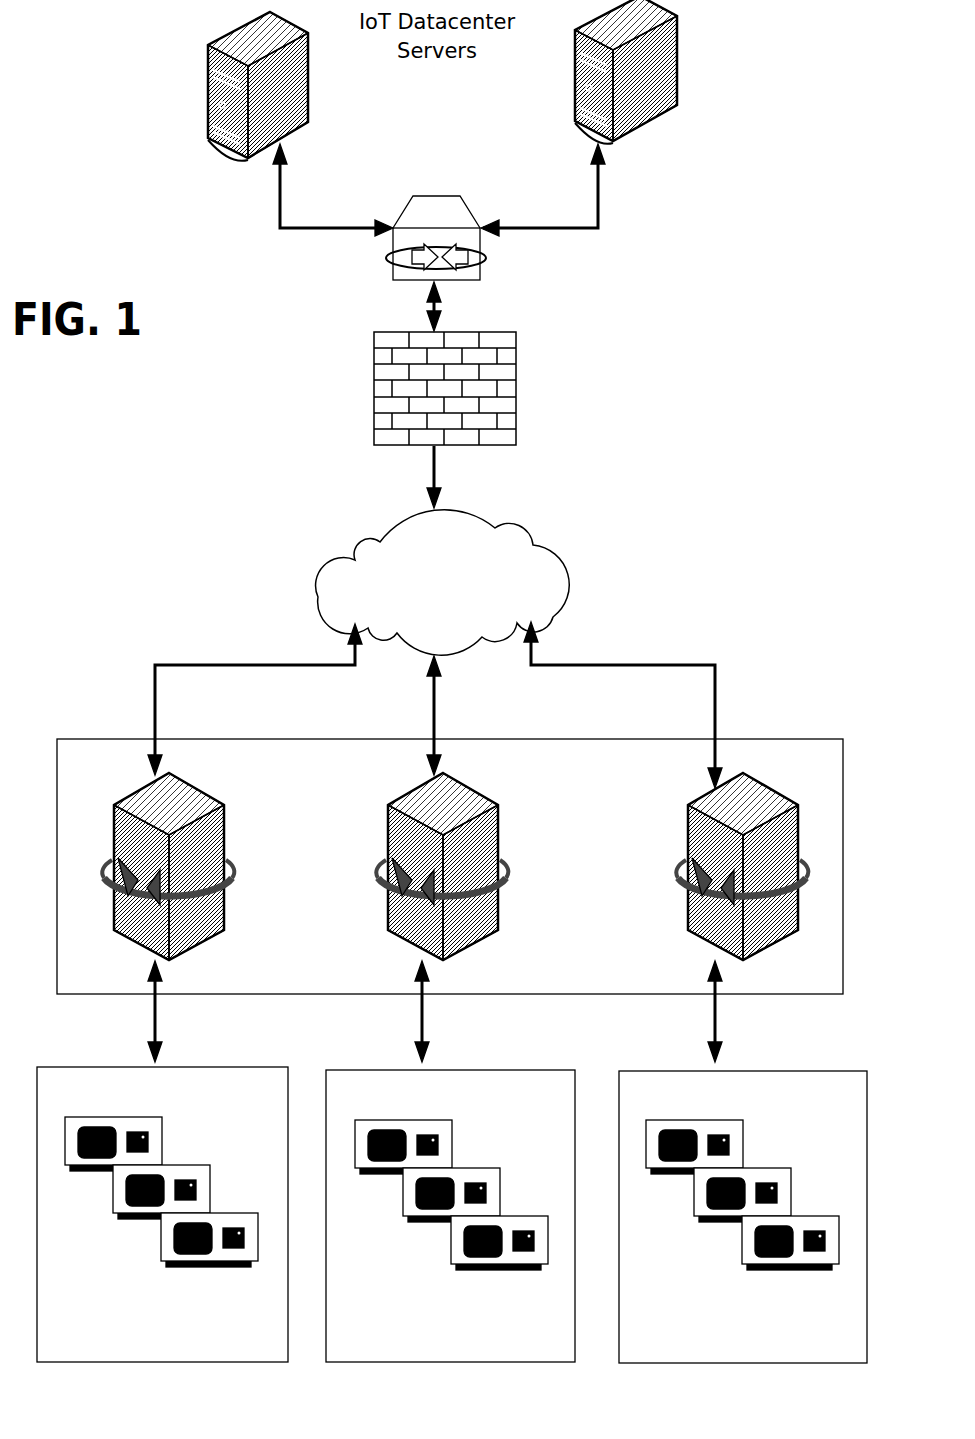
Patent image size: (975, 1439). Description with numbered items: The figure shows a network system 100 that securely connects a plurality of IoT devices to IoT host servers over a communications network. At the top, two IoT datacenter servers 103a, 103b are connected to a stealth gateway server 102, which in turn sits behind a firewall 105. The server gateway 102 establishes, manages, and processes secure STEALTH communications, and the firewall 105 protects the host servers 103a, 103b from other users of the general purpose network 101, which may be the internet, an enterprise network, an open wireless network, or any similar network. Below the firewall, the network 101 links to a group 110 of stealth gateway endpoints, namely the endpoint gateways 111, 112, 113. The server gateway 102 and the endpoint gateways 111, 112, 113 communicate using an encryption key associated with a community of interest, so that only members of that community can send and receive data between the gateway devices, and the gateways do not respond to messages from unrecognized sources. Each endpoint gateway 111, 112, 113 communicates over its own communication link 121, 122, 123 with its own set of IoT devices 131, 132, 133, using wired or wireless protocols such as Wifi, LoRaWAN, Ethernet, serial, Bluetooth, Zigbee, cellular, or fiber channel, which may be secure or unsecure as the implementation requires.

The network system 100 is at (767, 321).
The network 101 is at (535, 541).
The server gateway 102 is at (430, 196).
The IoT server 103a is at (308, 117).
The IoT server 103b is at (677, 100).
The firewall 105 is at (517, 397).
The stealth gateway endpoints group 110 is at (750, 738).
The endpoint gateway 111 is at (224, 900).
The endpoint gateway 112 is at (499, 900).
The endpoint gateway 113 is at (798, 900).
The communication link 121 is at (160, 1030).
The communication link 122 is at (425, 1030).
The communication link 123 is at (718, 1030).
The set of endpoint devices 131 is at (178, 1120).
The set of endpoint devices 132 is at (460, 1122).
The set of endpoint devices 133 is at (755, 1122).